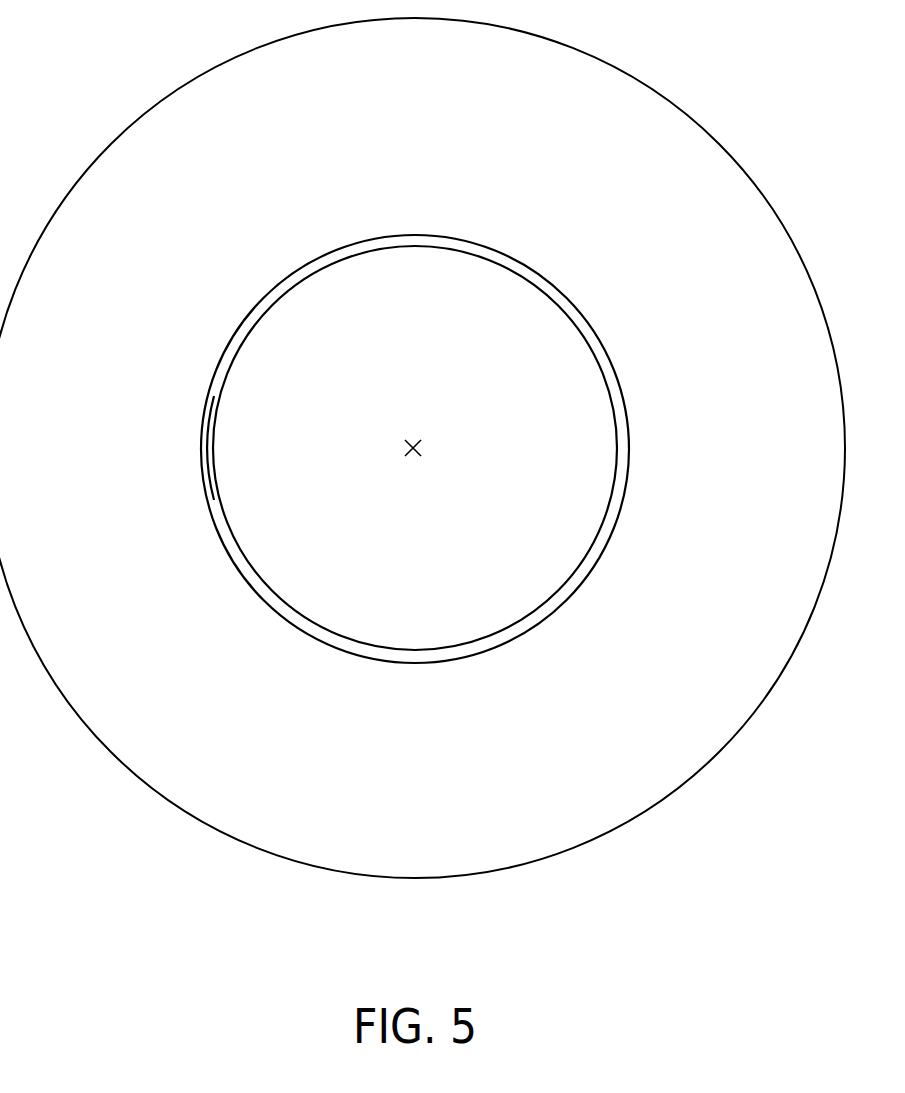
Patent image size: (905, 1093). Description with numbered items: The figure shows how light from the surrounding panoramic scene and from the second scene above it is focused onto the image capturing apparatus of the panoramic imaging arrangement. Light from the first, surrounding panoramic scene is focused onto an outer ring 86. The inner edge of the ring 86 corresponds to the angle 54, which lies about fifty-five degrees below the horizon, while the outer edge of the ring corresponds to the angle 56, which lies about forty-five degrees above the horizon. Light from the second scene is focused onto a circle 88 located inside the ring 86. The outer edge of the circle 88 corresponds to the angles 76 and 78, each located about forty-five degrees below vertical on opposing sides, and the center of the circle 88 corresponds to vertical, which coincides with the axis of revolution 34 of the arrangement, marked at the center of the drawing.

The axis of revolution 34 is at (421, 446).
The angle 54 is at (630, 442).
The angle 56 is at (845, 450).
The angle 76 is at (617, 459).
The angle 78 is at (214, 435).
The outer ring 86 is at (423, 97).
The circle 88 is at (430, 345).